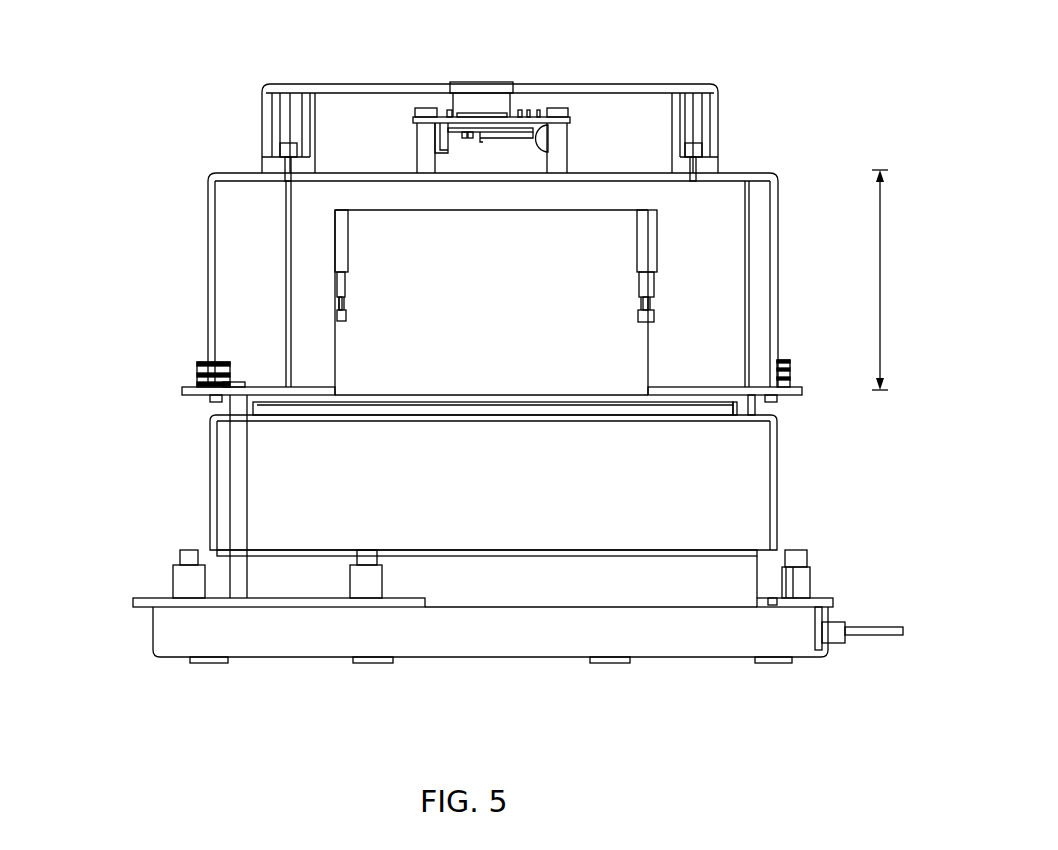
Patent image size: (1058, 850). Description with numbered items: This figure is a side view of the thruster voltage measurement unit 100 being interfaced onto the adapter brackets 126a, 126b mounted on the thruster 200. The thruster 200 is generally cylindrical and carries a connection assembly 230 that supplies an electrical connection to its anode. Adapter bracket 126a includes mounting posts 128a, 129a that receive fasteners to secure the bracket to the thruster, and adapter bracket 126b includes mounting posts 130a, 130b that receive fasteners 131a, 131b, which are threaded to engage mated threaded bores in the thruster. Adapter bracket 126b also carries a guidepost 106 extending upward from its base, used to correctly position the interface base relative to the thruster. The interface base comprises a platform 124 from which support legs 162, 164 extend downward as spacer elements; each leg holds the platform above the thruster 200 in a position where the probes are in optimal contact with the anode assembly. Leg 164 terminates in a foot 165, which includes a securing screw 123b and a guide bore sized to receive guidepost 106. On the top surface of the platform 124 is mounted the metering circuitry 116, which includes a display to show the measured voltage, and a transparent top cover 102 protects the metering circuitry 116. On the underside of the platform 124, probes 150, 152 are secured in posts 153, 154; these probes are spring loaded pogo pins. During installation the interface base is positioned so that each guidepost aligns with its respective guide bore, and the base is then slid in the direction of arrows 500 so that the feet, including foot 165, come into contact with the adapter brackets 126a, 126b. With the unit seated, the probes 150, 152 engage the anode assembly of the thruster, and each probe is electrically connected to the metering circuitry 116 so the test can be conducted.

The thruster voltage measurement unit 100 is at (820, 68).
The top cover 102 is at (722, 92).
The guidepost 106 is at (235, 442).
The metering circuitry 116 is at (448, 110).
The securing screw 123b is at (197, 364).
The platform 124 is at (240, 172).
The adapter bracket 126a is at (835, 600).
The adapter bracket 126b is at (133, 603).
The mounting post 128a is at (794, 553).
The mounting post 129a is at (810, 567).
The mounting post 130a is at (367, 550).
The mounting post 130b is at (187, 550).
The fastener 131a is at (383, 578).
The fastener 131b is at (180, 578).
The probe 150 is at (347, 292).
The probe 152 is at (657, 303).
The post 153 is at (347, 232).
The post 154 is at (657, 243).
The support leg 162 is at (772, 228).
The support leg 164 is at (226, 212).
The foot 165 is at (183, 388).
The thruster 200 is at (700, 660).
The connection assembly 230 is at (858, 634).
The arrows 500 is at (172, 350).